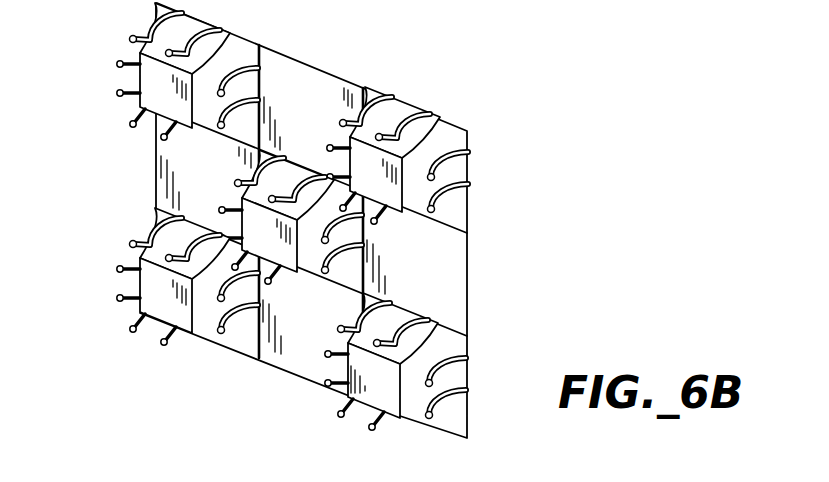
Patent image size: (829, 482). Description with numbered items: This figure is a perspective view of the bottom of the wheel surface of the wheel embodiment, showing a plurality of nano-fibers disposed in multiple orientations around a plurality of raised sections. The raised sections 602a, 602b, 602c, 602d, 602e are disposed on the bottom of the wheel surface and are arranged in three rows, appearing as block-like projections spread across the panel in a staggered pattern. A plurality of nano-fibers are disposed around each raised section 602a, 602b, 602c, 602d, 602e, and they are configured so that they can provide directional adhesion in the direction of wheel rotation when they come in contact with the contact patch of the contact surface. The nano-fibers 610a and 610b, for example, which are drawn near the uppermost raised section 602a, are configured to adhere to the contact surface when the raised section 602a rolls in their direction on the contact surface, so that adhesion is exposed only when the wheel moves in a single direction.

The raised section 602a is at (147, 98).
The raised section 602b is at (403, 118).
The raised section 602c is at (252, 225).
The raised section 602d is at (133, 307).
The raised section 602e is at (336, 363).
The nano-fiber 610a is at (153, 32).
The nano-fiber 610b is at (193, 48).